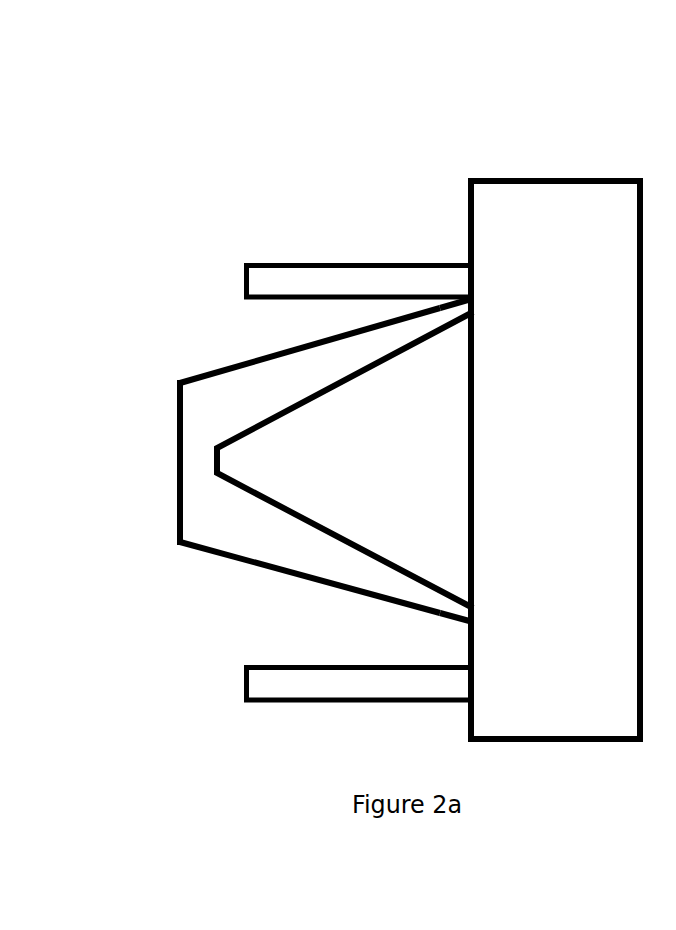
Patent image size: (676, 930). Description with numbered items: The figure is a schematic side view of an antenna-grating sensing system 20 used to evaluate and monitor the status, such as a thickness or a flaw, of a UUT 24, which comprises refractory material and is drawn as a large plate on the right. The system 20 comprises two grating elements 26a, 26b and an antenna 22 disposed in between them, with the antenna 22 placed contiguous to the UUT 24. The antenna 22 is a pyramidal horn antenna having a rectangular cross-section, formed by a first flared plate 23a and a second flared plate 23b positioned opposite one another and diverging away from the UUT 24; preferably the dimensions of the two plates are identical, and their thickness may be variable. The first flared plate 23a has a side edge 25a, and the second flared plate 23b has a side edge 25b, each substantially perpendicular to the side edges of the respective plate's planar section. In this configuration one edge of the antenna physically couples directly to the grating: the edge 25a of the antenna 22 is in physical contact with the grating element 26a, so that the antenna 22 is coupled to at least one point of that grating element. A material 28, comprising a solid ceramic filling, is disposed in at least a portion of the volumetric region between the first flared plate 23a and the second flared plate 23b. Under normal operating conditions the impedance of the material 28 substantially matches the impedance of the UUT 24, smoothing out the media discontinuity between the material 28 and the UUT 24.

The antenna-grating sensing system 20 is at (402, 112).
The antenna 22 is at (170, 448).
The first flared plate 23a is at (253, 357).
The second flared plate 23b is at (292, 580).
The UUT 24 is at (556, 177).
The side edge 25a is at (467, 297).
The side edge 25b is at (465, 627).
The grating element 26a is at (262, 259).
The grating element 26b is at (237, 682).
The material 28 is at (327, 463).